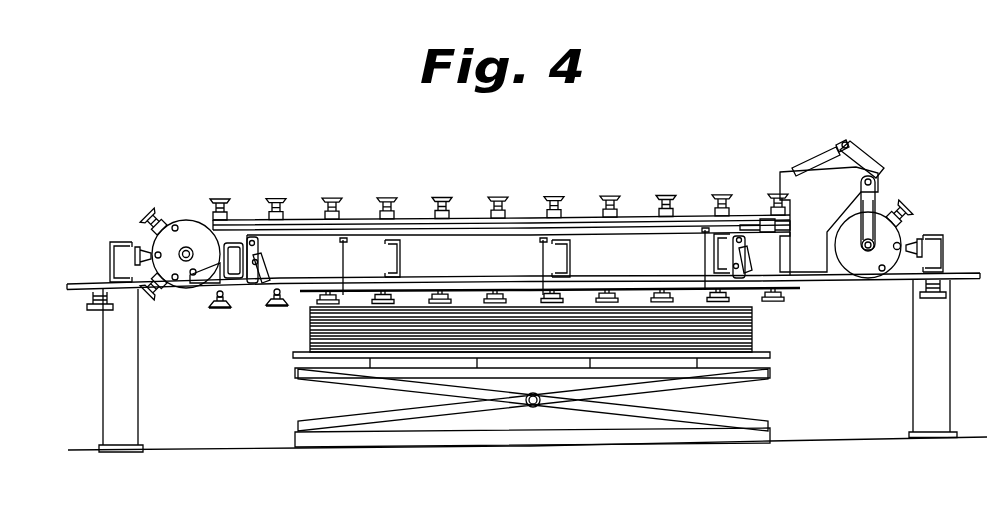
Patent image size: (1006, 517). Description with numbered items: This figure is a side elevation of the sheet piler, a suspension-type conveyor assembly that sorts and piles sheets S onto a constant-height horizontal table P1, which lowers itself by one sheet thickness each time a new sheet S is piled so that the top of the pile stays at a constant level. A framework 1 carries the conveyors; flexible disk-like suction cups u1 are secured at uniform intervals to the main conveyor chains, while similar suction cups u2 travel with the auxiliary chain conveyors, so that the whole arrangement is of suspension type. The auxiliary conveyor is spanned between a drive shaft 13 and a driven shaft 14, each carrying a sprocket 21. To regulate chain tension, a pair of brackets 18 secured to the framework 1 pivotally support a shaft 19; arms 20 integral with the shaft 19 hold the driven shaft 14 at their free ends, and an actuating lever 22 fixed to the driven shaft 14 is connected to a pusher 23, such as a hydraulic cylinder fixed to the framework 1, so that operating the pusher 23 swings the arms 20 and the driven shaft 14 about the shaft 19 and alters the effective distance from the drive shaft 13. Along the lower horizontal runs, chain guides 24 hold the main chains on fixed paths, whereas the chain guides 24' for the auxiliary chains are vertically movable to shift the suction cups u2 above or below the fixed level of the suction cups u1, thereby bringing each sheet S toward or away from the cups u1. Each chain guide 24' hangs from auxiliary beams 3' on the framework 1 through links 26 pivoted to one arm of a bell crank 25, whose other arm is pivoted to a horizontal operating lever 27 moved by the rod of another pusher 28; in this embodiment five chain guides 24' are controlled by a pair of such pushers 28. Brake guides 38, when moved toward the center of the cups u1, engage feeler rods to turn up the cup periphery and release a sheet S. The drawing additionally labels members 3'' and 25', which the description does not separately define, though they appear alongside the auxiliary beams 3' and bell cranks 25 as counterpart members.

The framework 1 is at (631, 278).
The horizontal operating lever 27 is at (422, 236).
The suction cups u2 is at (334, 200).
The brake guides 38 is at (300, 300).
The suction cups u1 is at (96, 312).
The drive shaft 13 is at (192, 248).
The sprocket 21 is at (186, 221).
The chain guides 24 is at (155, 312).
The chain guides 24' is at (259, 315).
The auxiliary beams 3' is at (477, 222).
The intermediate bracket with pin 3'' is at (455, 266).
The left pivot bracket 25' is at (288, 231).
The links 26 is at (262, 260).
The bell crank 25 is at (728, 210).
The pusher 28 is at (775, 220).
The brackets 18 is at (780, 172).
The pusher 23 is at (812, 165).
The actuating lever 22 is at (856, 152).
The shaft 19 is at (877, 182).
The arms 20 is at (868, 205).
The driven shaft 14 is at (893, 228).
The sheets S is at (755, 310).
The constant-height horizontal table P1 is at (771, 370).